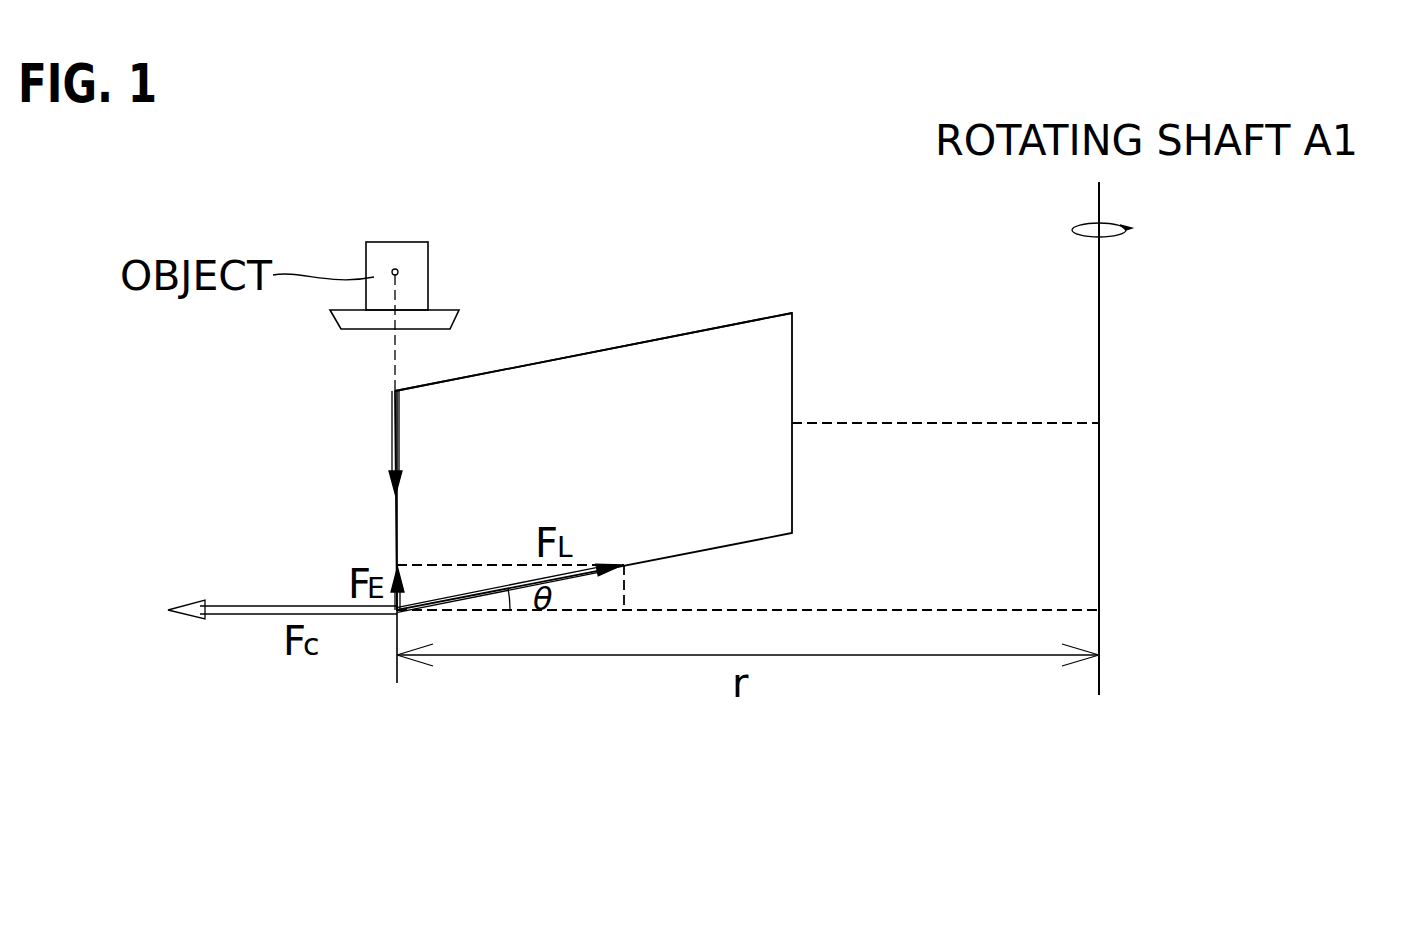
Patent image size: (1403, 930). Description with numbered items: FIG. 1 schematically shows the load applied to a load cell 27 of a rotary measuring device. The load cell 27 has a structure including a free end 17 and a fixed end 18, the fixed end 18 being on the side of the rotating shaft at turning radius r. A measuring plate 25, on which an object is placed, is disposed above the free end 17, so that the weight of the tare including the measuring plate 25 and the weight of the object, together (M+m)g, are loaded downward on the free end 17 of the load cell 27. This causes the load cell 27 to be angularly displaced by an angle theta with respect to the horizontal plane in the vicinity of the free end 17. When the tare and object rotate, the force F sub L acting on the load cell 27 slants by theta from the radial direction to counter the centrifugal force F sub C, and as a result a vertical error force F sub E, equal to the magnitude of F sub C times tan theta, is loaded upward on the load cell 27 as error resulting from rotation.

The free end 17 is at (338, 488).
The fixed end 18 is at (838, 330).
The measuring plate 25 is at (347, 322).
The load cell 27 is at (725, 325).